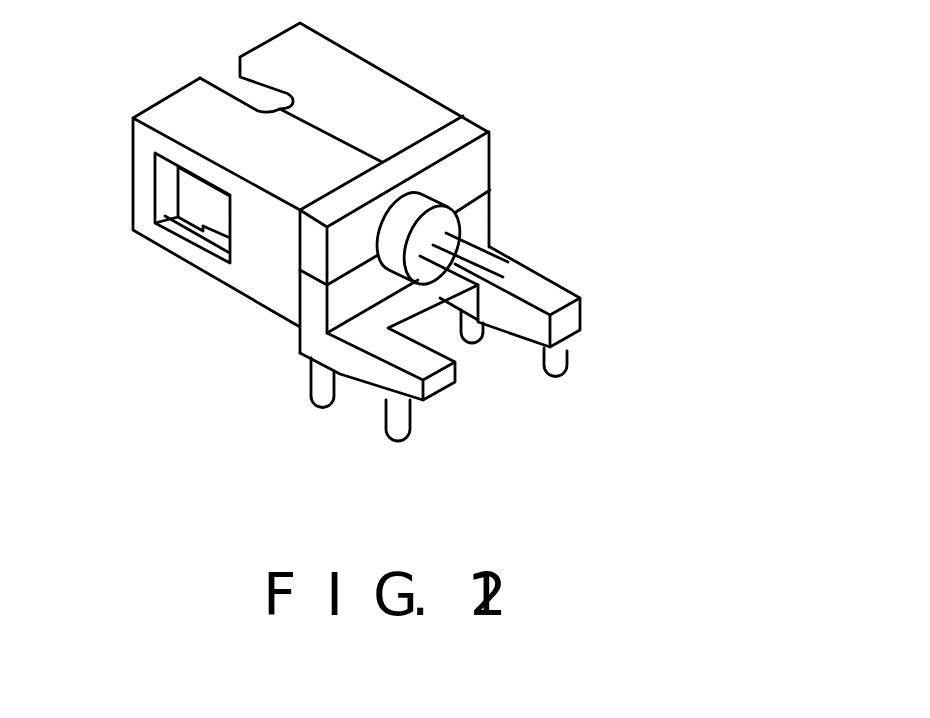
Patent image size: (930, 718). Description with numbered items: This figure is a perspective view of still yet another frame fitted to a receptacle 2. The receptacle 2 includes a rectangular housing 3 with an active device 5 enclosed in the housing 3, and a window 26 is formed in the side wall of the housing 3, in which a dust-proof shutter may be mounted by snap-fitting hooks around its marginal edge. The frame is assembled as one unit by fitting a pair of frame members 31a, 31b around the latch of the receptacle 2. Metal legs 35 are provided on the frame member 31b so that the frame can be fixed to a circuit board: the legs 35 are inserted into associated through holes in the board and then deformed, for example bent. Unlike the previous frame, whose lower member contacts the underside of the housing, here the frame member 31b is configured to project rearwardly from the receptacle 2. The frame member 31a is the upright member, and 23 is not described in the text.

The receptacle 2 is at (392, 64).
The rectangular housing 3 is at (190, 95).
The active device 5 is at (366, 257).
The L-shaped bracket 23 is at (501, 229).
The window 26 is at (168, 191).
The frame member 31a is at (482, 156).
The frame member 31b is at (545, 296).
The legs 35 is at (318, 387).